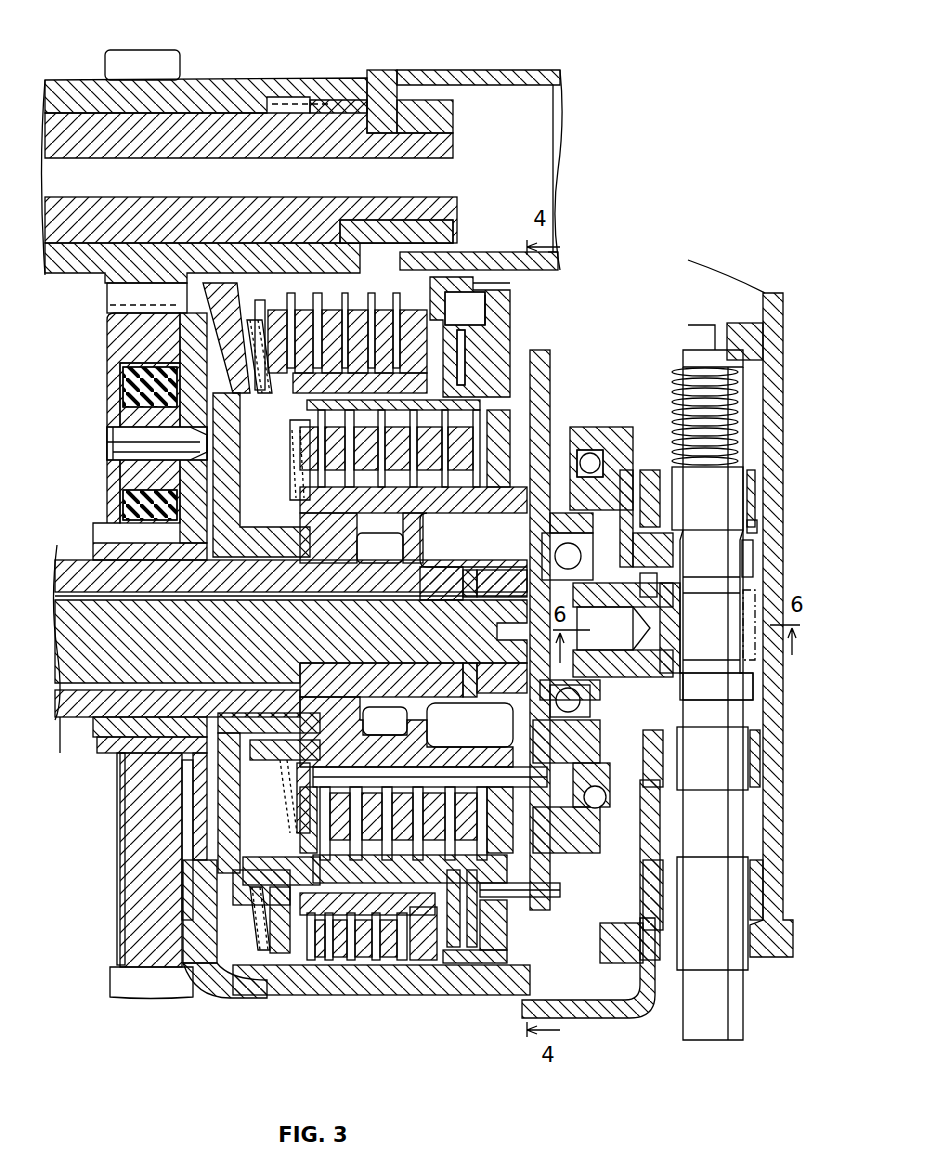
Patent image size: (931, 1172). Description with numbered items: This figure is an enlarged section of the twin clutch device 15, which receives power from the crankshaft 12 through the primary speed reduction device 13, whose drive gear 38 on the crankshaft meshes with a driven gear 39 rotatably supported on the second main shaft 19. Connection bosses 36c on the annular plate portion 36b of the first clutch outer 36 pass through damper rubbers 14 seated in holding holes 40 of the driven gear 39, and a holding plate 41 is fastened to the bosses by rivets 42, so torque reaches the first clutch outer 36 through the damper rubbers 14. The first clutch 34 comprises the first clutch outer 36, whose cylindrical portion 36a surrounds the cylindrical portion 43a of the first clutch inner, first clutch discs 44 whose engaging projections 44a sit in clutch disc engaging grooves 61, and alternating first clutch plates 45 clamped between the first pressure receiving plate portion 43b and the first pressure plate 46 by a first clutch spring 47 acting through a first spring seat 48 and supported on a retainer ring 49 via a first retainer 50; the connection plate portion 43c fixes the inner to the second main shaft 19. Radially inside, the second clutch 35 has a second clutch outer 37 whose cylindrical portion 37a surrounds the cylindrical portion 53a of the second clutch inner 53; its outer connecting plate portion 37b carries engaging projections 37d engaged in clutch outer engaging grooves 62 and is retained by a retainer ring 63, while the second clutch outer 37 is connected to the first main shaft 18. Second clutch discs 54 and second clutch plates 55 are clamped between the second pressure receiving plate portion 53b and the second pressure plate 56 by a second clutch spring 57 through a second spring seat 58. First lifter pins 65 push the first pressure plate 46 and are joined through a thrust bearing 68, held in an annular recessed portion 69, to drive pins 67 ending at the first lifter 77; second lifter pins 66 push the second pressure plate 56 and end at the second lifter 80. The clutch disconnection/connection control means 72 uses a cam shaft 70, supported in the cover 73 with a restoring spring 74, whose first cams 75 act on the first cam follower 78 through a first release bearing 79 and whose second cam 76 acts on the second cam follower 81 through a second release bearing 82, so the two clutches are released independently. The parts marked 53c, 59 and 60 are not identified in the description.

The crankshaft 12 is at (222, 118).
The primary speed reduction device 13 is at (188, 66).
The damper rubbers 14 is at (125, 378).
The twin clutch device 15 is at (628, 283).
The first main shaft 18 is at (78, 560).
The second main shaft 19 is at (147, 649).
The first clutch 34 is at (440, 335).
The second clutch 35 is at (508, 412).
The first clutch outer 36 is at (262, 1002).
The cylindrical portion 36a is at (240, 992).
The annular plate portion 36b is at (150, 836).
The connection bosses 36c is at (125, 386).
The second clutch outer 37 is at (545, 932).
The cylindrical portion 37a is at (522, 870).
The outer connecting plate portion 37b is at (530, 892).
The engaging projections 37d is at (492, 268).
The drive gear 38 is at (160, 52).
The driven gear 39 is at (135, 998).
The holding holes 40 is at (120, 449).
The holding plate 41 is at (118, 860).
The rivets 42 is at (120, 432).
The cylindrical portion 43a is at (300, 846).
The first pressure receiving plate portion 43b is at (418, 955).
The connection plate portion 43c is at (185, 790).
The first clutch discs 44 is at (310, 962).
The engaging projections 44a is at (342, 300).
The first clutch plates 45 is at (347, 962).
The first pressure plate 46 is at (276, 295).
The first clutch spring 47 is at (207, 300).
The first spring seat 48 is at (268, 300).
The retainer ring 49 is at (160, 385).
The first retainer 50 is at (165, 300).
The second clutch inner 53 is at (497, 750).
The cylindrical portion 53a is at (460, 500).
The second pressure receiving plate portion 53b is at (512, 432).
The hub recess 53c is at (423, 546).
The second clutch discs 54 is at (440, 800).
The second clutch plates 55 is at (350, 480).
The second pressure plate 56 is at (325, 549).
The second clutch spring 57 is at (298, 460).
The second spring seat 58 is at (298, 420).
The sleeve 59 is at (245, 578).
The sleeve 60 is at (292, 592).
The clutch disc engaging grooves 61 is at (385, 300).
The clutch outer engaging grooves 62 is at (560, 255).
The retainer ring 63 is at (500, 297).
The first lifter pins 65 is at (380, 962).
The second lifter pins 66 is at (383, 775).
The drive pins 67 is at (600, 872).
The thrust bearing 68 is at (460, 962).
The annular recessed portion 69 is at (478, 300).
The cam shaft 70 is at (735, 815).
The clutch disconnection/connection control means 72 is at (760, 562).
The cover 73 is at (782, 470).
The restoring spring 74 is at (730, 418).
The first cams 75 is at (755, 527).
The second cam 76 is at (745, 605).
The first lifter 77 is at (608, 838).
The first cam follower 78 is at (686, 545).
The first release bearing 79 is at (650, 775).
The second lifter 80 is at (585, 445).
The second cam follower 81 is at (690, 640).
The second release bearing 82 is at (597, 470).